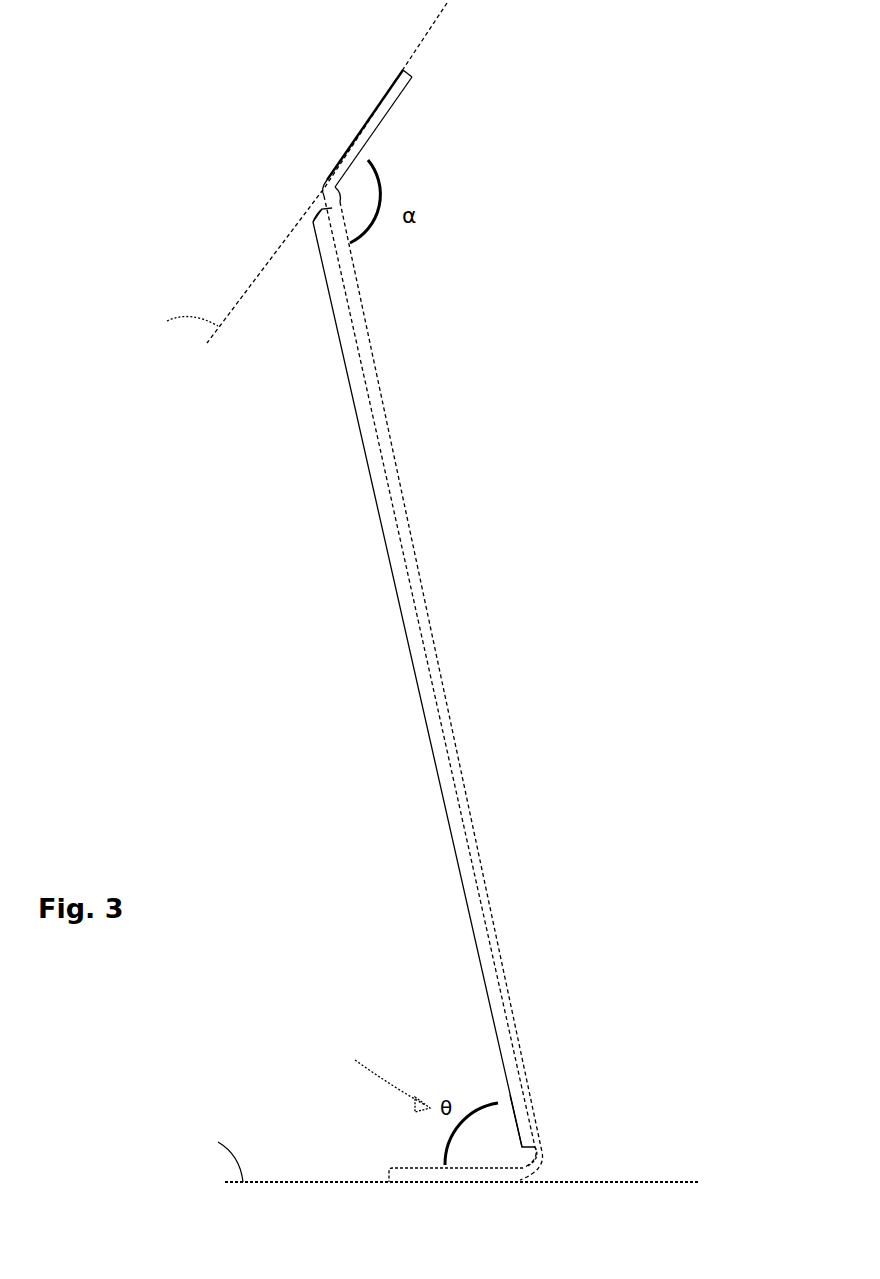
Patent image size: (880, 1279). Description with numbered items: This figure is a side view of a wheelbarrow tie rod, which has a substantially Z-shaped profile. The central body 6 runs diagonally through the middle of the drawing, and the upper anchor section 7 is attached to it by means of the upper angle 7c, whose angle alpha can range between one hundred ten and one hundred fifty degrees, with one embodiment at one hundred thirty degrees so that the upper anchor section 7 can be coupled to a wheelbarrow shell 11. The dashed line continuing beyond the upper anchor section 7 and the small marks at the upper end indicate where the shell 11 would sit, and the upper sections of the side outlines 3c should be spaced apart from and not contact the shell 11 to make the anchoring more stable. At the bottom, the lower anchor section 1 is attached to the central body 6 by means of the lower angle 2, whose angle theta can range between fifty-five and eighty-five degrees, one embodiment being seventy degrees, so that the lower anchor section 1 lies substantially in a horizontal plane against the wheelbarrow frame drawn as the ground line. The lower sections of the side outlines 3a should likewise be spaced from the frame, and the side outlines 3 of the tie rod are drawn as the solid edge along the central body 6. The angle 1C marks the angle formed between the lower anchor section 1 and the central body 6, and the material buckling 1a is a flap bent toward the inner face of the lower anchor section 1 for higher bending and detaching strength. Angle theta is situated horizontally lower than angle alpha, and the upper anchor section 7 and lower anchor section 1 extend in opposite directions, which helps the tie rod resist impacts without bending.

The lower anchor section 1 is at (407, 1173).
The lower angle 2 is at (542, 1157).
The frame 3 is at (423, 697).
The lower sections of side outlines 3a is at (522, 1120).
The upper sections of side outlines 3c is at (313, 220).
The central body 6 is at (463, 680).
The upper anchor section 7 is at (427, 93).
The upper angle 7c is at (327, 182).
The wheelbarrow shell 11 is at (130, 345).
The angle 1C is at (318, 1040).
The material buckling 1a is at (200, 1122).